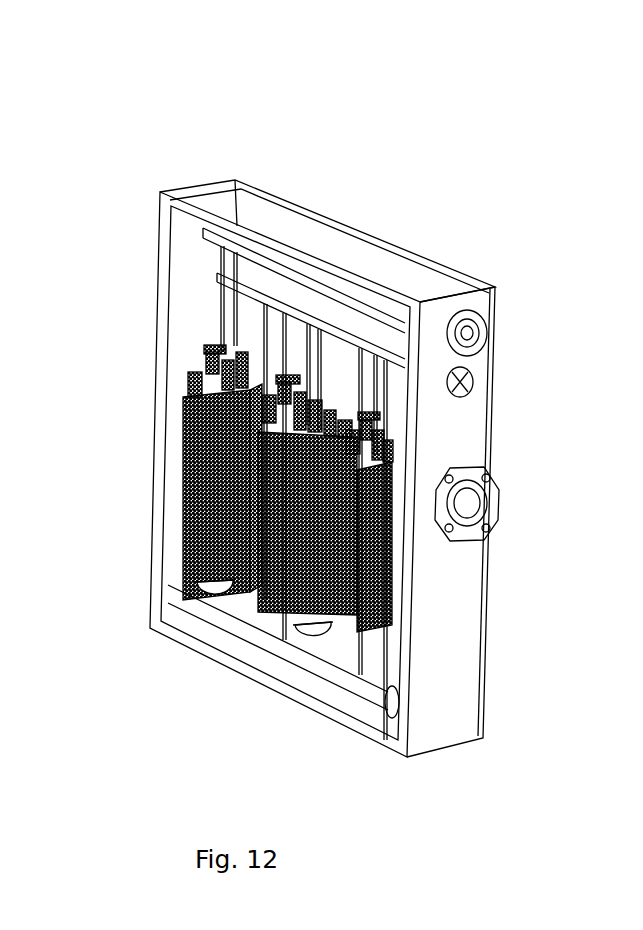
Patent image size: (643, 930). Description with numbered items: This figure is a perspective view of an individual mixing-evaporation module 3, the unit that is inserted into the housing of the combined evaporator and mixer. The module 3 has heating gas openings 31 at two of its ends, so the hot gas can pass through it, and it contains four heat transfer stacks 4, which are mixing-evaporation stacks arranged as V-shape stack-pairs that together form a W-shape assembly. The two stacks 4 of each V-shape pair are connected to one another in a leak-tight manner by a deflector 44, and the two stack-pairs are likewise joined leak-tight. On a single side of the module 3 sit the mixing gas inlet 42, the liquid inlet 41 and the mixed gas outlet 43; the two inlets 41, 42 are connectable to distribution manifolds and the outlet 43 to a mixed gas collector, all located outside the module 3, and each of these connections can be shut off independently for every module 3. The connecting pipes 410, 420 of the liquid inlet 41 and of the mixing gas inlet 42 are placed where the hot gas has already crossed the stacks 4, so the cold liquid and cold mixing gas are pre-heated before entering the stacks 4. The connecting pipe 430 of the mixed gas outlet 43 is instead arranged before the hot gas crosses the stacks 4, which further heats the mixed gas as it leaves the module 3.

The mixing-evaporation module 3 is at (458, 640).
The heating gas openings 31 is at (316, 238).
The heat transfer stacks 4 is at (338, 516).
The liquid inlet 41 is at (462, 385).
The mixing gas inlet 42 is at (468, 332).
The mixed gas outlet 43 is at (470, 505).
The deflector 44 is at (223, 597).
The connecting pipe of the liquid inlet 410 is at (327, 287).
The connecting pipe of the mixing gas inlet 420 is at (372, 342).
The connecting pipe of the mixed gas outlet 430 is at (358, 690).